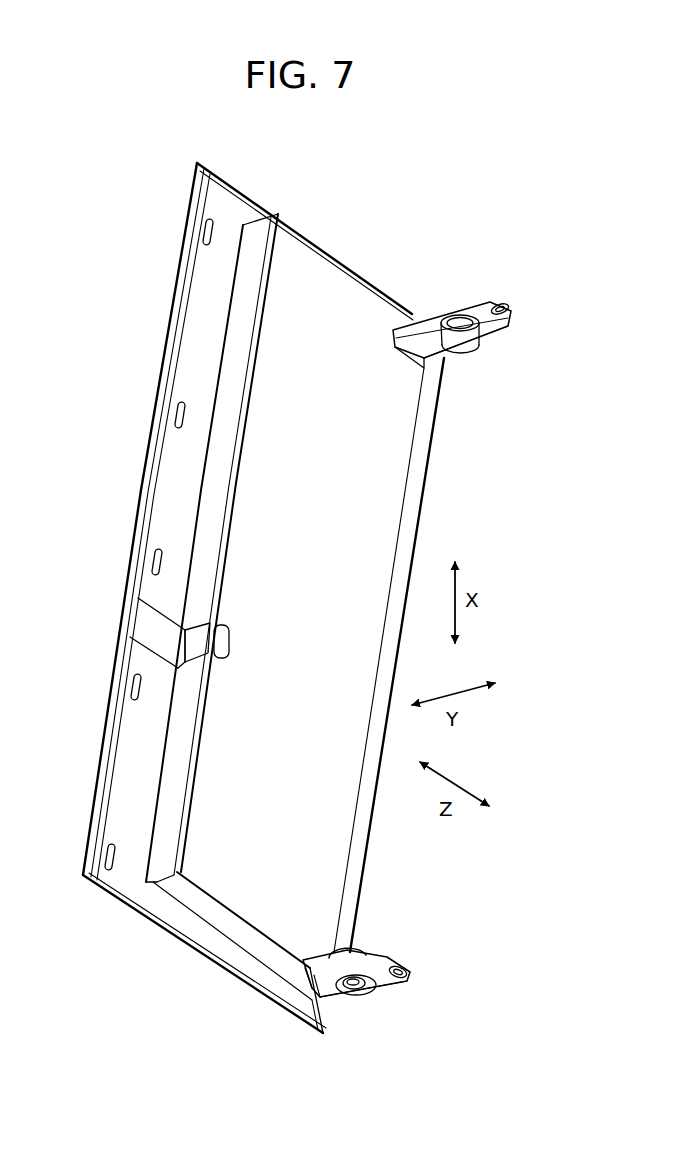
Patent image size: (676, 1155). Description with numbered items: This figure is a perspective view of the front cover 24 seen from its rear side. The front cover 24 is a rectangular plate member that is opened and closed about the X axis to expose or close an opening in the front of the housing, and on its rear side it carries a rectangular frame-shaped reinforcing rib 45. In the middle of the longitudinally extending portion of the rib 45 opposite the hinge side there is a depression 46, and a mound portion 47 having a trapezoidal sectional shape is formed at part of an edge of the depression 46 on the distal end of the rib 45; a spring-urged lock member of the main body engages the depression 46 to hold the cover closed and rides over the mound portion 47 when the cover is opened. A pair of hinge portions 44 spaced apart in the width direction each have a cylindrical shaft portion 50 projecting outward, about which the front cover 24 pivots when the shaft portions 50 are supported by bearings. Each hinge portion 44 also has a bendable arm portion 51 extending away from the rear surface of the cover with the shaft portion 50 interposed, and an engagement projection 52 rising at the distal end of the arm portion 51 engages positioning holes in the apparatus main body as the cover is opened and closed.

The front cover 24 is at (389, 221).
The hinge portions 44 is at (456, 347).
The reinforcing rib 45 is at (243, 378).
The depression 46 is at (196, 640).
The mound portion 47 is at (219, 640).
The shaft portions 50 is at (343, 995).
The arm portion 51 is at (506, 332).
The engagement projection 52 is at (501, 305).